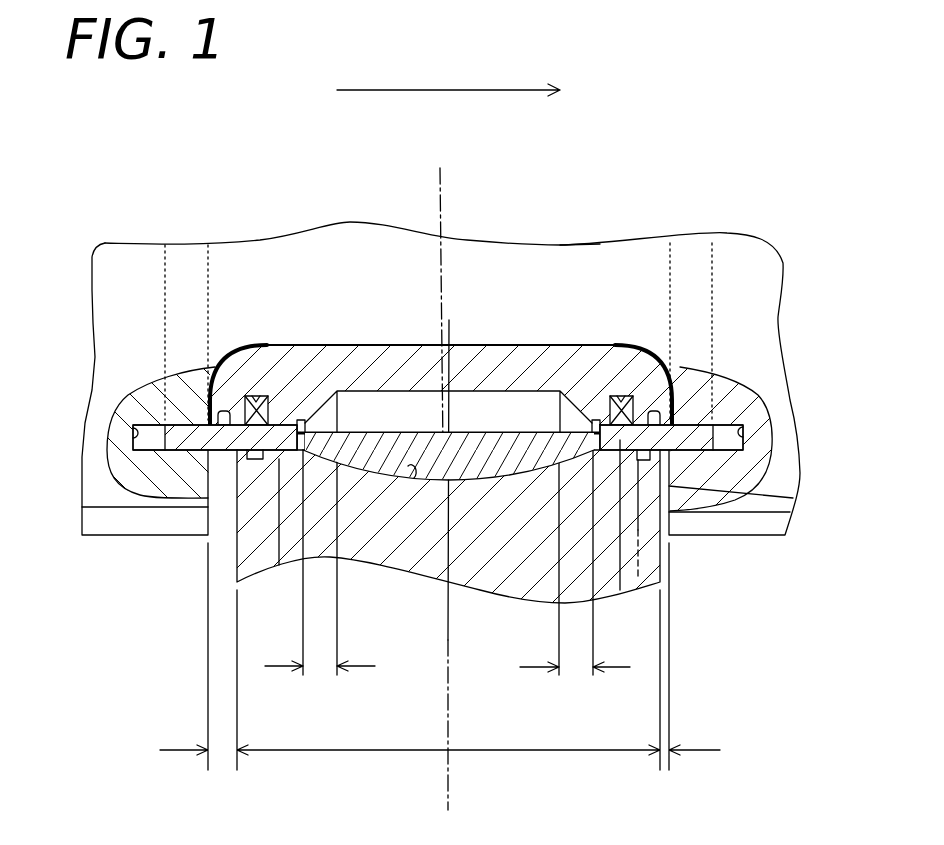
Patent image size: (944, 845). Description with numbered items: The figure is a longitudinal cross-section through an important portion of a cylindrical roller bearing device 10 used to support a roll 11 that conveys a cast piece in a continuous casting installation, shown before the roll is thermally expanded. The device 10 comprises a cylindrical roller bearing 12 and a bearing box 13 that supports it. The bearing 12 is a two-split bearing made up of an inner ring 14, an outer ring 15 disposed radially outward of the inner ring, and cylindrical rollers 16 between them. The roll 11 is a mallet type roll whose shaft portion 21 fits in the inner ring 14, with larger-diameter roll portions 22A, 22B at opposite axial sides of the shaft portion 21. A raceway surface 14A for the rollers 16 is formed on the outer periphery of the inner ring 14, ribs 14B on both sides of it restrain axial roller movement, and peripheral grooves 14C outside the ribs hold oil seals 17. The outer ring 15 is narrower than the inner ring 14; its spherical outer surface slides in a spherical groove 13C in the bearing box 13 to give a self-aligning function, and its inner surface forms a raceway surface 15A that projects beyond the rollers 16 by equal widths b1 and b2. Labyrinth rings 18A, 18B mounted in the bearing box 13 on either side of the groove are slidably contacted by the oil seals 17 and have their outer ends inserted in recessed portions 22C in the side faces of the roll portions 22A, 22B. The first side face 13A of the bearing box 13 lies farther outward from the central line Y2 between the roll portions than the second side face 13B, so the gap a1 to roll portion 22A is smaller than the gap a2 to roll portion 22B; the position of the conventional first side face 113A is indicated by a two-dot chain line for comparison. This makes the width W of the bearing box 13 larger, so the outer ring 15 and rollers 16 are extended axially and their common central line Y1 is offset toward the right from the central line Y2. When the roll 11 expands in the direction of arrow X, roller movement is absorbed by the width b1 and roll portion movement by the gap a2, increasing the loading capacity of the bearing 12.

The cylindrical roller bearing device 10 is at (717, 205).
The roll 11 is at (96, 548).
The cylindrical roller bearing 12 is at (535, 332).
The bearing box 13 is at (501, 606).
The first side face 13A is at (793, 498).
The second side face 13B is at (82, 507).
The spherical groove 13C is at (414, 478).
The inner ring 14 is at (298, 370).
The raceway surface 14A is at (483, 399).
The ribs 14B is at (332, 410).
The peripheral grooves 14C is at (254, 396).
The outer ring 15 is at (476, 448).
The raceway surface 15A is at (511, 430).
The cylindrical rollers 16 is at (405, 410).
The oil seals 17 is at (279, 565).
The labyrinth ring 18A is at (696, 425).
The labyrinth ring 18B is at (108, 462).
The shaft portion 21 is at (576, 292).
The roll portion 22A is at (743, 536).
The roll portion 22B is at (150, 536).
The recessed portions 22C is at (733, 425).
The first side face of the conventional bearing box 113A is at (643, 545).
The gap a1 is at (665, 757).
The gap a2 is at (223, 757).
The width b1 is at (578, 670).
The width b2 is at (318, 670).
The width of the bearing box W is at (380, 753).
The direction of arrow X is at (405, 90).
The central line Y1 is at (447, 772).
The central line Y2 is at (440, 207).